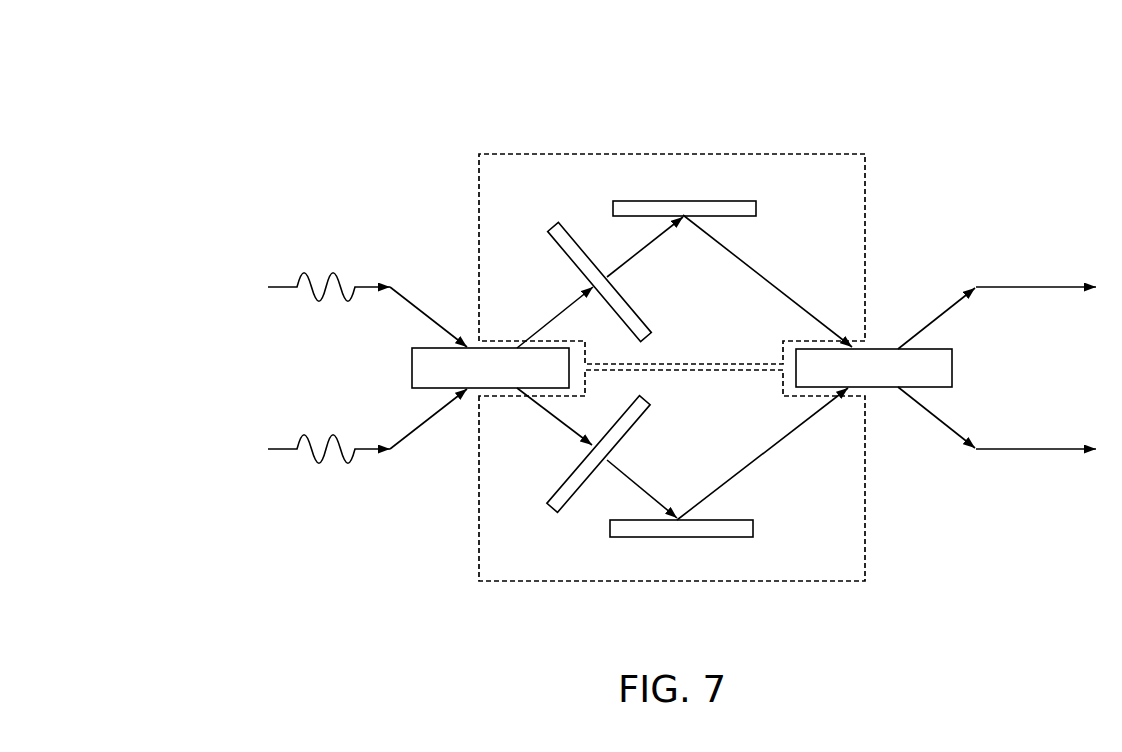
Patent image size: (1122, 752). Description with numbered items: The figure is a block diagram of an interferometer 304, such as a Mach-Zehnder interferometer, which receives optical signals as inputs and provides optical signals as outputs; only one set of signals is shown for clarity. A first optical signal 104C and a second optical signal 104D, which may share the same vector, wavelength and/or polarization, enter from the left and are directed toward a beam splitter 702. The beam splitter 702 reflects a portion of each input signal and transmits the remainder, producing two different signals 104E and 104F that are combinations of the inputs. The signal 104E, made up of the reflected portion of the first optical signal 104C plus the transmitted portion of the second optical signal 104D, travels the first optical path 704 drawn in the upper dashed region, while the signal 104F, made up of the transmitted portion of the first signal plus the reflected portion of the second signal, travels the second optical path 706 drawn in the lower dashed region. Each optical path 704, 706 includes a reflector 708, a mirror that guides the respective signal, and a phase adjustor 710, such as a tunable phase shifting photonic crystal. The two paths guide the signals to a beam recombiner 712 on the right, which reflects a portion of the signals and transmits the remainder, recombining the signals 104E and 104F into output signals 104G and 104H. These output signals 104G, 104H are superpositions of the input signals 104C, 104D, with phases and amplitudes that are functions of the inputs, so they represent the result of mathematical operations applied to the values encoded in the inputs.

The interferometer 304 is at (695, 86).
The first optical path 704 is at (515, 154).
The second optical path 706 is at (515, 581).
The beam splitter 702 is at (508, 378).
The output beam combiner 712 is at (890, 378).
The reflectors 708 is at (633, 201).
The phase adjustors 710 is at (555, 228).
The first optical signal 104C is at (280, 287).
The second optical signal 104D is at (280, 449).
The signal 104E is at (557, 316).
The signal 104F is at (560, 421).
The output signal 104G is at (1067, 287).
The output signal 104H is at (1067, 449).